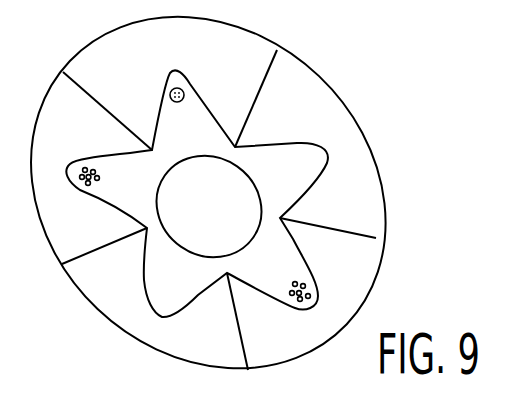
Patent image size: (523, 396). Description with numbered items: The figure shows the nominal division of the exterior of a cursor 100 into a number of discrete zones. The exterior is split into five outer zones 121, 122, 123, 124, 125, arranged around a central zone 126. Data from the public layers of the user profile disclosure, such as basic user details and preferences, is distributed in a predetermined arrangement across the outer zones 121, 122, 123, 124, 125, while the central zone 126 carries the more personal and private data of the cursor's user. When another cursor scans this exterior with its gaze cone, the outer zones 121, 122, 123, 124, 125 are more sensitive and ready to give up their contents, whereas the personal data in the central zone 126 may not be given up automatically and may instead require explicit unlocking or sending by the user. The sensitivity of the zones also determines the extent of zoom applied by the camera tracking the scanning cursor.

The rotor / body 100 is at (158, 305).
The zone 121 is at (214, 346).
The zone 122 is at (355, 274).
The zone 123 is at (308, 126).
The zone 124 is at (140, 81).
The zone 125 is at (89, 232).
The central zone 126 is at (227, 216).